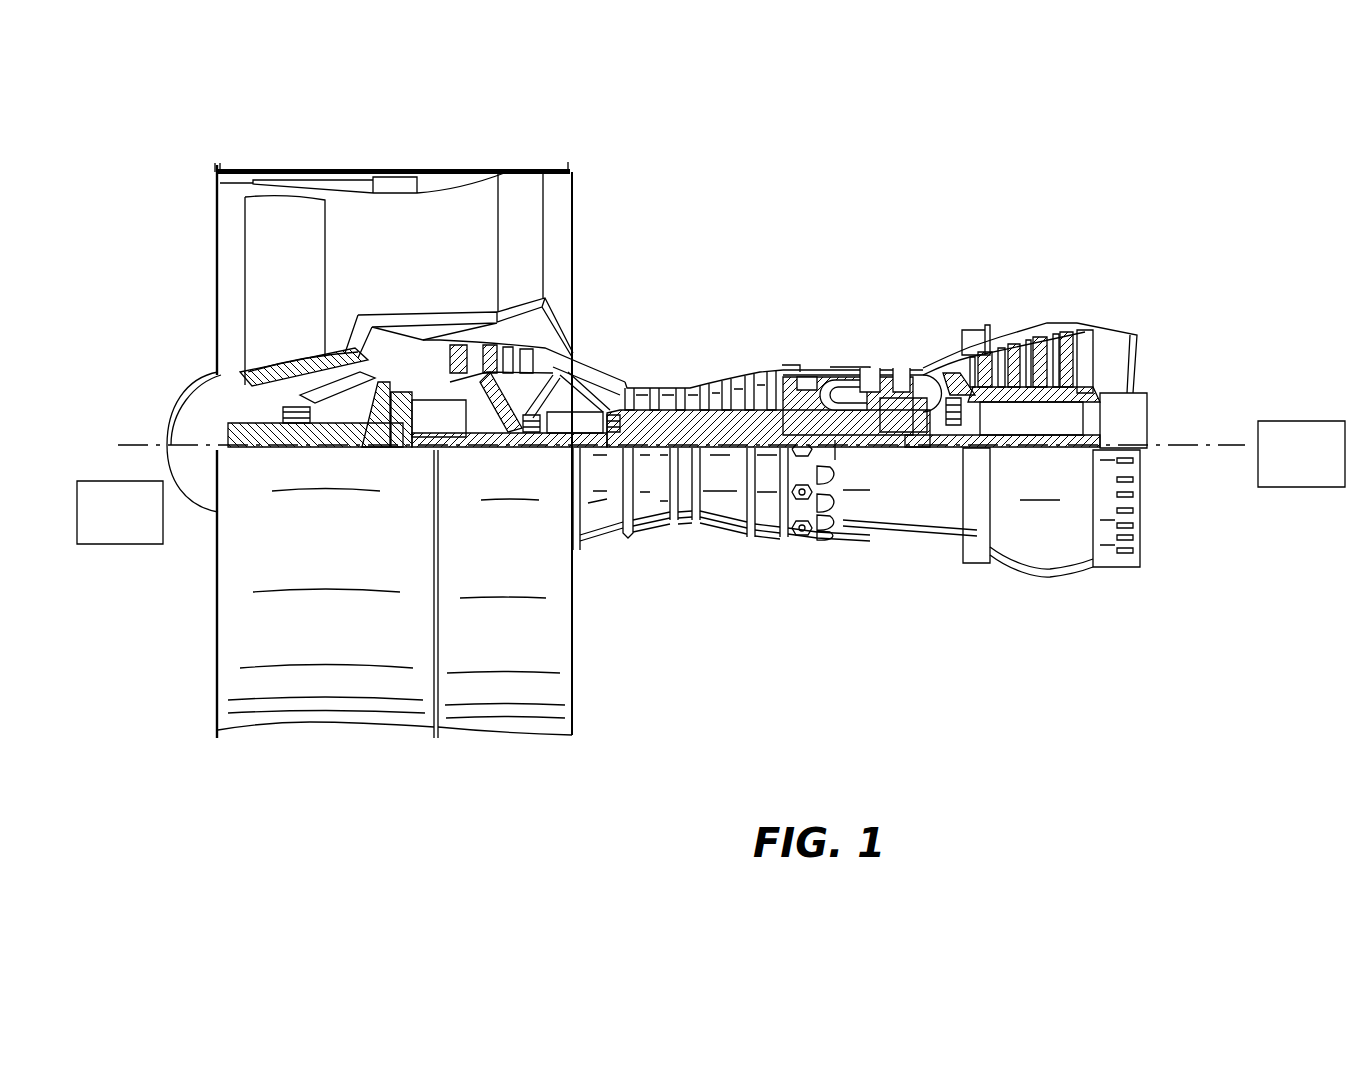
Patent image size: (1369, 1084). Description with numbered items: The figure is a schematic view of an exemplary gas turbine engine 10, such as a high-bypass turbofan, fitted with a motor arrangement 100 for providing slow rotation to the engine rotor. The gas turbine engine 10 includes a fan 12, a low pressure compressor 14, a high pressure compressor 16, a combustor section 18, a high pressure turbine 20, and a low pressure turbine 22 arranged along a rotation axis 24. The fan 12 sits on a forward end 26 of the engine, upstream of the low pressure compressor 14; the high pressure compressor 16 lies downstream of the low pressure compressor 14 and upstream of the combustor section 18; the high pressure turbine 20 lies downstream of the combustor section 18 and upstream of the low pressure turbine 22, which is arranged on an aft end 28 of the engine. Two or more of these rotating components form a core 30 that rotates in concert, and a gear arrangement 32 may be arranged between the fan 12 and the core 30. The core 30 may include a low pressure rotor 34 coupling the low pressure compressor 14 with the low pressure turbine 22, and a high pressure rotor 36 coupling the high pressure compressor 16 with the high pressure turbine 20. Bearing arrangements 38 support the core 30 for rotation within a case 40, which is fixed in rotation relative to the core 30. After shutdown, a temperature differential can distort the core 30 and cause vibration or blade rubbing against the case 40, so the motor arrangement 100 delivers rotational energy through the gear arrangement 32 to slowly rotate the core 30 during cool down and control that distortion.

The gas turbine engine 10 is at (345, 784).
The fan 12 is at (270, 303).
The low pressure compressor 14 is at (592, 248).
The high pressure compressor 16 is at (720, 305).
The combustor section 18 is at (835, 278).
The high pressure turbine 20 is at (960, 222).
The low pressure turbine 22 is at (1108, 244).
The rotation axis 24 is at (1168, 450).
The forward end 26 is at (104, 526).
The aft end 28 is at (1286, 468).
The core 30 is at (686, 440).
The gear arrangement 32 is at (395, 408).
The low pressure rotor 34 is at (823, 446).
The high pressure rotor 36 is at (870, 440).
The bearing arrangements 38 is at (522, 448).
The case 40 is at (885, 510).
The motor arrangement 100 is at (423, 431).